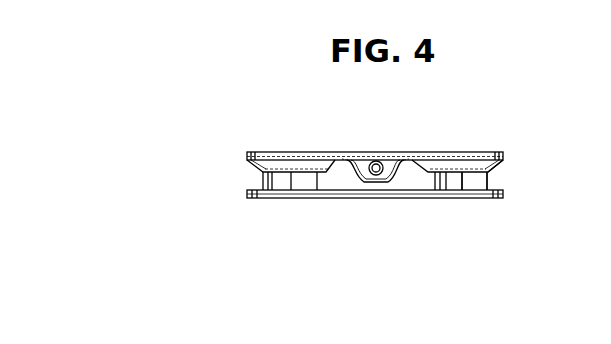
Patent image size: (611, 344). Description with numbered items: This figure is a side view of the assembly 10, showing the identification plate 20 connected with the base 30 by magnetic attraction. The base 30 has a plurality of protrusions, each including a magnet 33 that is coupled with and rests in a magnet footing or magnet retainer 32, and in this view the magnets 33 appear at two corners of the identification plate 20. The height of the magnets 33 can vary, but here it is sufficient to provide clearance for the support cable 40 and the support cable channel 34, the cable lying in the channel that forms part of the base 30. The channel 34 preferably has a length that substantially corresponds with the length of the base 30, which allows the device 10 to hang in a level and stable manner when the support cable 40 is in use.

The assembly 10 is at (224, 198).
The identification plate 20 is at (412, 199).
The base 30 is at (437, 152).
The magnet retainer 32 is at (486, 170).
The magnet 33 is at (477, 182).
The support cable channel 34 is at (358, 181).
The support cable 40 is at (365, 161).